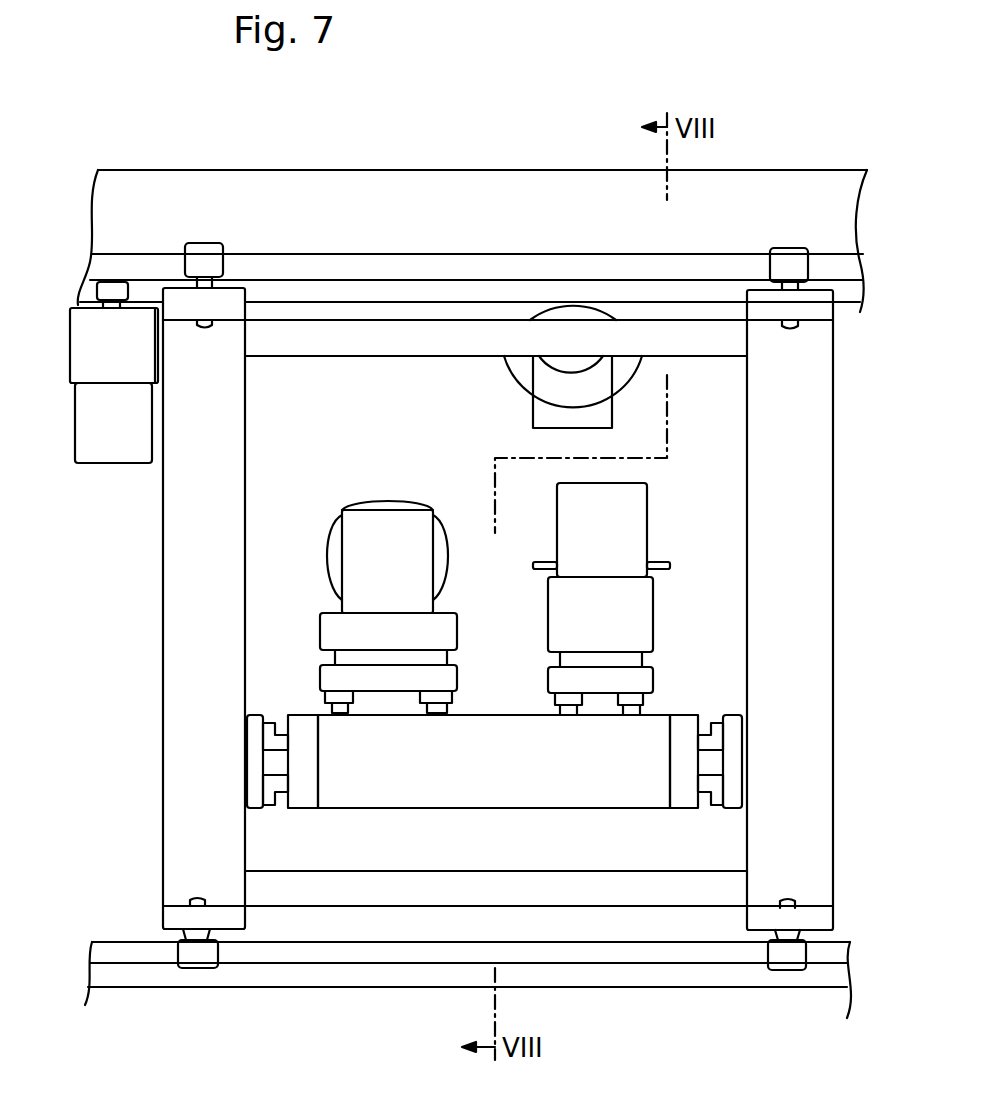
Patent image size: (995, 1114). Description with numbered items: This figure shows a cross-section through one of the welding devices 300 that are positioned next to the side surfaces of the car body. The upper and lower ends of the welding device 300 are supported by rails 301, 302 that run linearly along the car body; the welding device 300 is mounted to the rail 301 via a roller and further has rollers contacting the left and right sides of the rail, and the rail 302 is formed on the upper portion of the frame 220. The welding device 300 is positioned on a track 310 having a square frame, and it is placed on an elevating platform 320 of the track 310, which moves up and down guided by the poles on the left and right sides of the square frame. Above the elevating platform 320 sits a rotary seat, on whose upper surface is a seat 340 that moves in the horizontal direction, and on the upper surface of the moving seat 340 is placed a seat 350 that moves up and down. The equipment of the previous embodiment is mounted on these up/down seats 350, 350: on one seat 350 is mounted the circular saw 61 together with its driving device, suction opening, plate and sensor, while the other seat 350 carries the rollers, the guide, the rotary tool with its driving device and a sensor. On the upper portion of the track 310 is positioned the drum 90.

The frame 220 is at (337, 195).
The rail 301 is at (427, 290).
The rail 302 is at (308, 955).
The welding device 300 is at (340, 450).
The track 310 is at (148, 726).
The elevating platform 320 is at (527, 786).
The seat 340 is at (546, 678).
The seat 350 is at (552, 623).
The circular saw 61 is at (662, 560).
The drum 90 is at (503, 393).